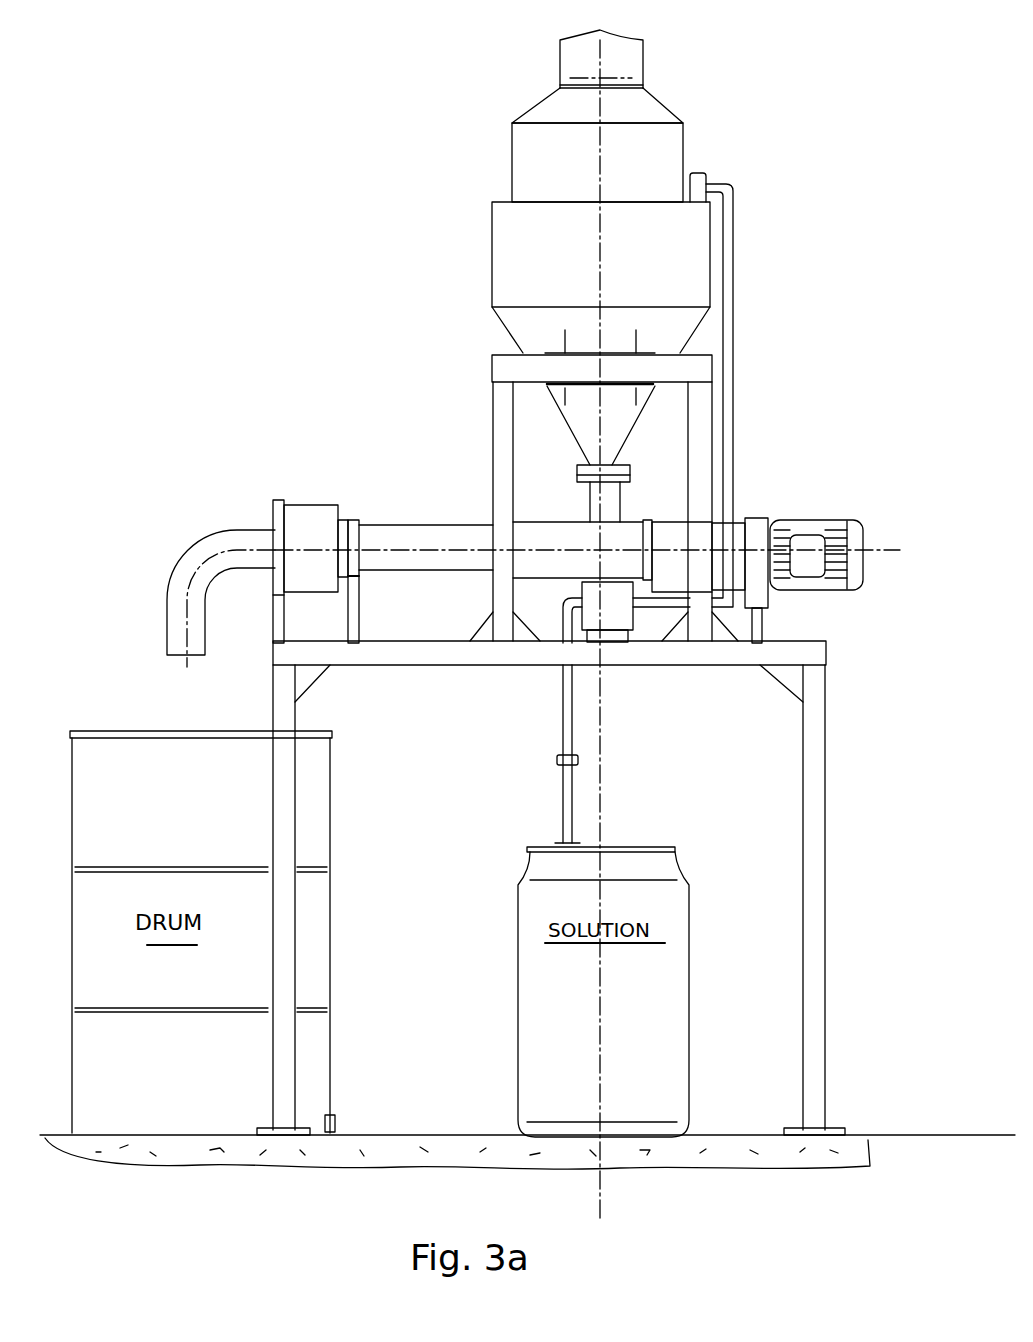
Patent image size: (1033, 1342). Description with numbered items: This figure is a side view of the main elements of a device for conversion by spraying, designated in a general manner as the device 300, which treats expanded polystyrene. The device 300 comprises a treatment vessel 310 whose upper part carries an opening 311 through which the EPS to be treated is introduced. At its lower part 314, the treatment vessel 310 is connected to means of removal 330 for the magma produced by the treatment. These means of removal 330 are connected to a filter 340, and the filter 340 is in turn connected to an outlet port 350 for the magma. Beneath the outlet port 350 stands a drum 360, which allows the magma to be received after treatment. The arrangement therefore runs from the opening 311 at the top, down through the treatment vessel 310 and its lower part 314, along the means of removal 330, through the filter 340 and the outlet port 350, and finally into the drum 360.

The device for conversion by spraying 300 is at (432, 118).
The treatment vessel 310 is at (693, 248).
The opening 311 is at (635, 60).
The lower part 314 is at (572, 432).
The means of removal 330 is at (403, 525).
The filter 340 is at (301, 512).
The outlet port 350 is at (173, 660).
The drum 360 is at (313, 805).